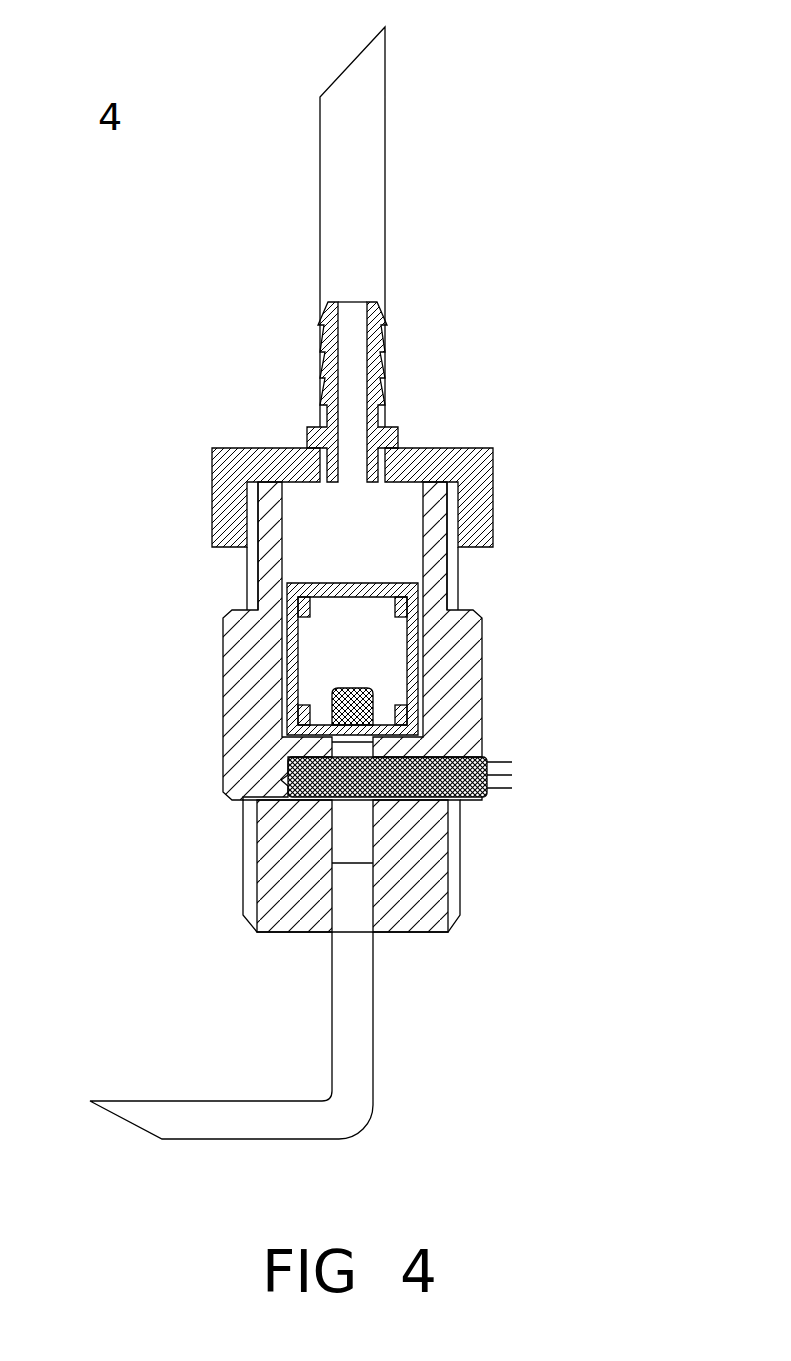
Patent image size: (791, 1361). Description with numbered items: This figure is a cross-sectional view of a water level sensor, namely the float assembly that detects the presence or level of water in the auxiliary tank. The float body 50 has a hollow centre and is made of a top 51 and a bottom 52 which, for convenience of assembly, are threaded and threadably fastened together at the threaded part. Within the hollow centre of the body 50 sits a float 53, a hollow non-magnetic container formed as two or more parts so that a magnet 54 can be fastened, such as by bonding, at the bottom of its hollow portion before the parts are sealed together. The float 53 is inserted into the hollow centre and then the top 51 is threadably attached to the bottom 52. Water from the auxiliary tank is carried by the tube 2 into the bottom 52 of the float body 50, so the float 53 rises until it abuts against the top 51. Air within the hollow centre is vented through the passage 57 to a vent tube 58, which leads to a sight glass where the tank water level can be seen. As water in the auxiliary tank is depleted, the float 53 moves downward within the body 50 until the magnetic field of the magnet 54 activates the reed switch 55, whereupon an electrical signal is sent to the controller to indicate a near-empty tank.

The tube 2 is at (341, 1035).
The float body 50 is at (437, 641).
The top portion 51 is at (453, 540).
The bottom portion 52 is at (456, 842).
The float 53 is at (261, 659).
The magnet 54 is at (231, 622).
The reed switch 55 is at (477, 718).
The passage 57 is at (400, 424).
The vent tube 58 is at (440, 227).